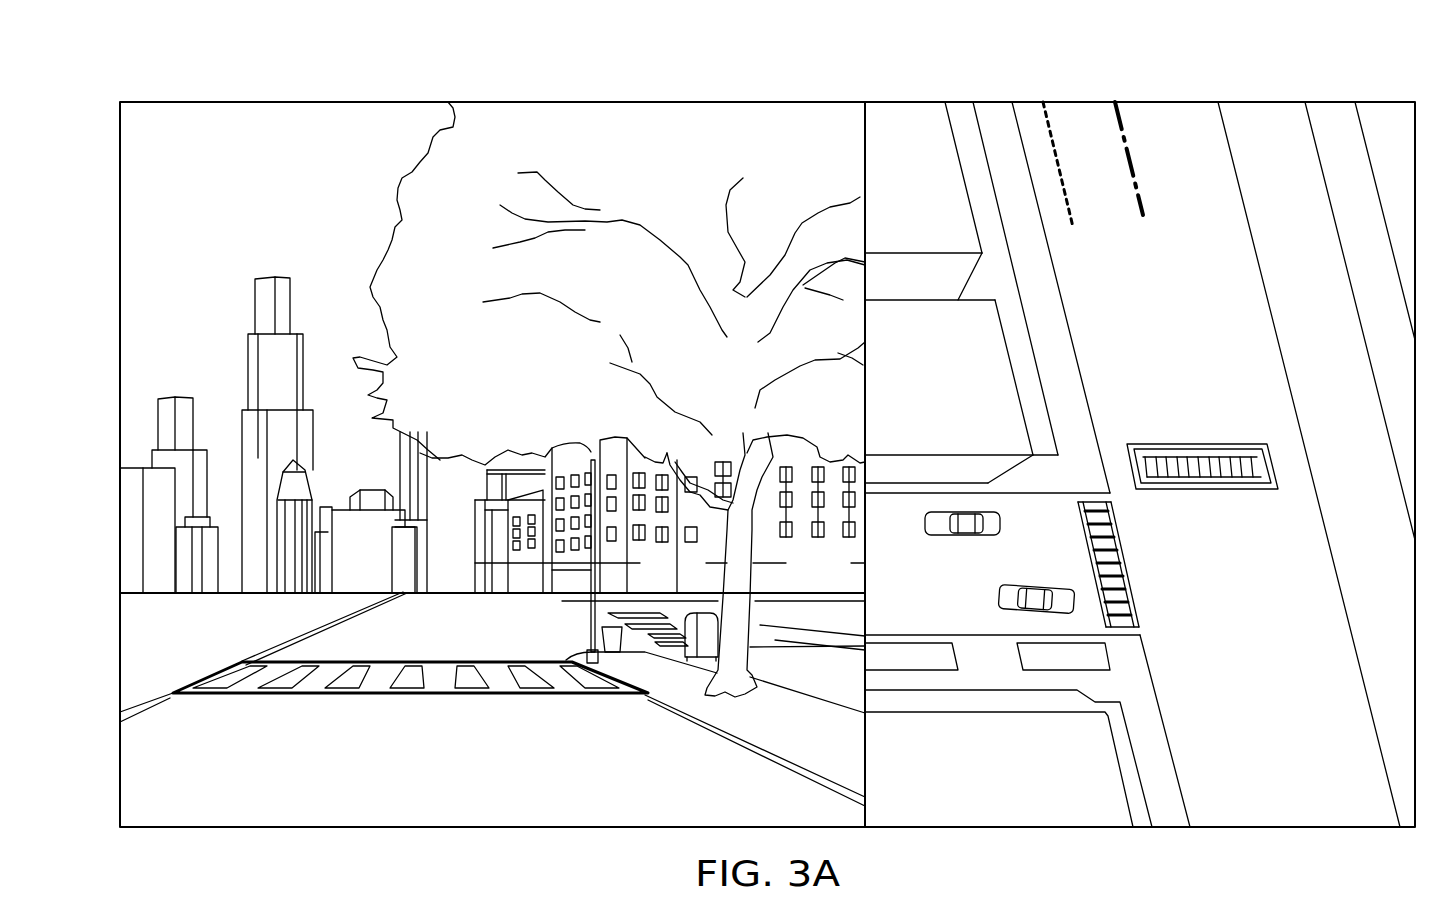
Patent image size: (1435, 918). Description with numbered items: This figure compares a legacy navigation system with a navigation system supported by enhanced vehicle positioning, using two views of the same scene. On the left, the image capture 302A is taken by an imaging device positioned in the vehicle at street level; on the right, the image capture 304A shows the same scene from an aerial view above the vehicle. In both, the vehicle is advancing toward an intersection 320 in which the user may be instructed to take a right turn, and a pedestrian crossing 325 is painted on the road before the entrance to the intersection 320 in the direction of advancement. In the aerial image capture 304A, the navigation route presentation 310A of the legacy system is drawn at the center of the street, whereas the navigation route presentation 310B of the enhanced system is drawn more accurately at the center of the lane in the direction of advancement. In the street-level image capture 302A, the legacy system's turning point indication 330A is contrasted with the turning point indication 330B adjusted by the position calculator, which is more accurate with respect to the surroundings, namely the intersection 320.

The image capture 302A is at (228, 100).
The image capture 304A is at (1276, 99).
The navigation route presentation 310A is at (1130, 118).
The navigation route presentation 310B is at (1055, 116).
The intersection 320 is at (480, 620).
The pedestrian crossing 325 is at (408, 665).
The turning point indication 330A is at (797, 620).
The turning point indication 330B is at (655, 606).